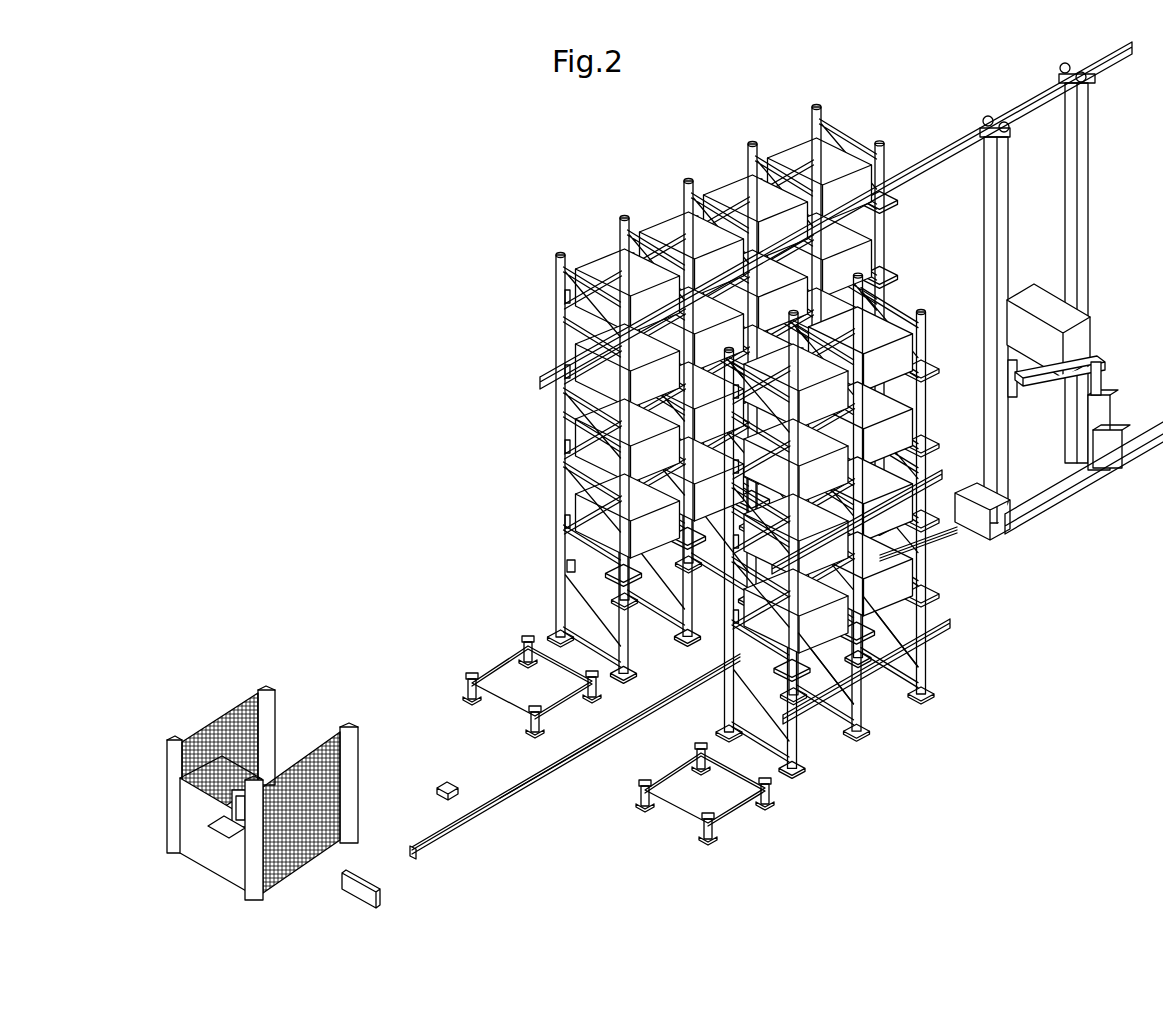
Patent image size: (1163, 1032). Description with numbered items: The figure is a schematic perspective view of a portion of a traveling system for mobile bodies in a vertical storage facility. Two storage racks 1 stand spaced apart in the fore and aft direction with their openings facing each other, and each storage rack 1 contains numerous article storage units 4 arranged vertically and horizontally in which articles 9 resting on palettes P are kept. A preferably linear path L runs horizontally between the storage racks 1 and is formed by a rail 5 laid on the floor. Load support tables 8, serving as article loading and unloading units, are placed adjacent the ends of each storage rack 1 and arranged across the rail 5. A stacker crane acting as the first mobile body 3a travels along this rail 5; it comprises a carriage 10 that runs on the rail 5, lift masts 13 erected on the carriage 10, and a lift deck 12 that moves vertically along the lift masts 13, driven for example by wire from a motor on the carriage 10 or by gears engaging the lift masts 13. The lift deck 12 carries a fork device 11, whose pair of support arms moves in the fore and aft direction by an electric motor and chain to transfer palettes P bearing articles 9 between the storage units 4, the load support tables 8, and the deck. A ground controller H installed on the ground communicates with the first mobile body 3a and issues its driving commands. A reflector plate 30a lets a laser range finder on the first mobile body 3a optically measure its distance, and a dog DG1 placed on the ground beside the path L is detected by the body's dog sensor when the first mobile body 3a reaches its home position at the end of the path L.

The storage rack 1 is at (780, 465).
The first mobile body 3a is at (851, 327).
The article storage unit 4 is at (828, 654).
The rail 5 is at (500, 798).
The load support table 8 is at (470, 664).
The article 9 is at (583, 515).
The carriage 10 is at (1068, 478).
The fork device 11 is at (1080, 366).
The lift deck 12 is at (1057, 392).
The lift mast 13 is at (988, 262).
The dog for the first mobile body DG1 is at (446, 782).
The ground controller H is at (235, 828).
The path L is at (571, 780).
The palette P is at (568, 566).
The reflector plate for the first mobile body 30a is at (381, 893).